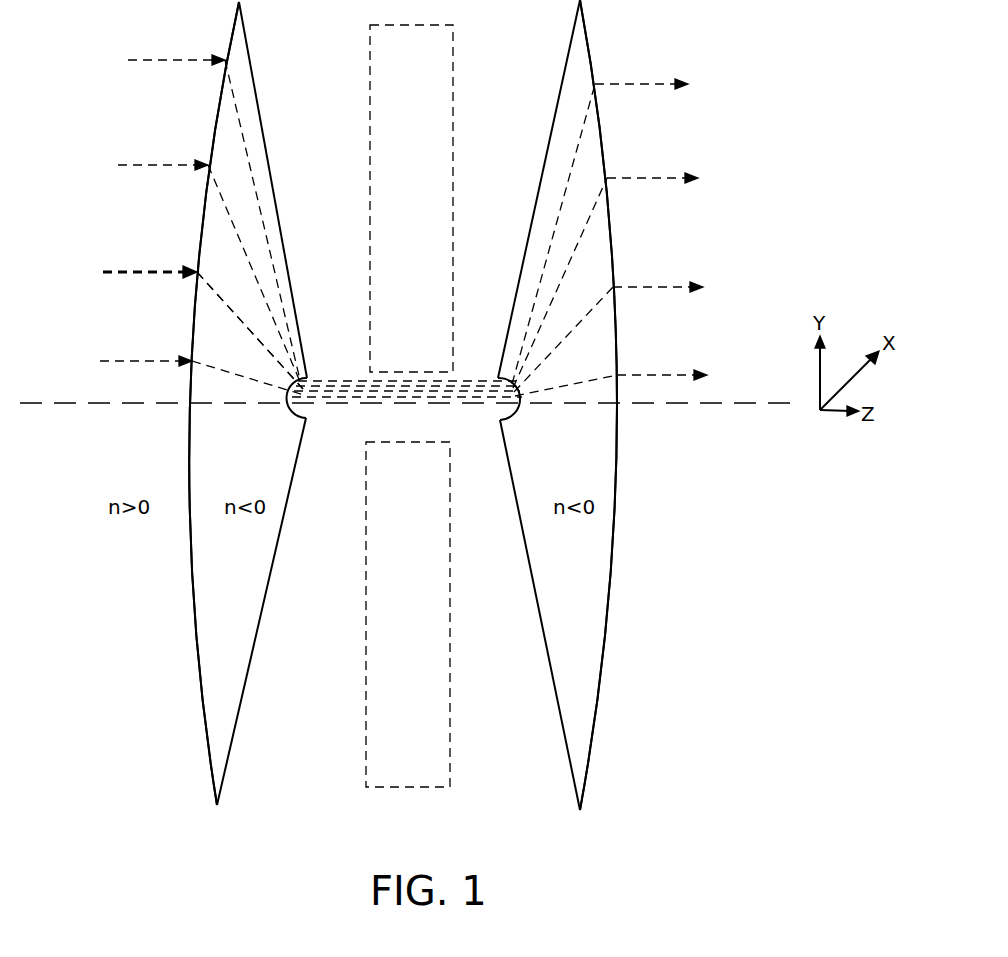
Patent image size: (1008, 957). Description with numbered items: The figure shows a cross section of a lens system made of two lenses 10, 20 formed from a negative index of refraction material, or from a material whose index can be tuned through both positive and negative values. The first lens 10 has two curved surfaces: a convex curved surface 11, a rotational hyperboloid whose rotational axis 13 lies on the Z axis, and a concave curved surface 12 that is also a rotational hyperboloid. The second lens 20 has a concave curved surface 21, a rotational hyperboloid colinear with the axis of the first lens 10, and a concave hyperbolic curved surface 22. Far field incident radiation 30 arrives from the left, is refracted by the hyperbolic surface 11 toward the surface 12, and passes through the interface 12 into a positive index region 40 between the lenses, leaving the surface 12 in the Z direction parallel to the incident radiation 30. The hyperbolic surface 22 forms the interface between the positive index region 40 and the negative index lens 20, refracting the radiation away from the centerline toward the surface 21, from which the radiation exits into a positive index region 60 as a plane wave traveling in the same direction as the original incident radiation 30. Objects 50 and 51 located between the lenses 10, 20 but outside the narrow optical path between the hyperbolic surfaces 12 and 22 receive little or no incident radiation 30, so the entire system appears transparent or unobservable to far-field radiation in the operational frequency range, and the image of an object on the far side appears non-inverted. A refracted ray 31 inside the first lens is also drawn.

The lens 10 is at (205, 678).
The curved surface 11 is at (186, 554).
The curved surface 12 is at (312, 409).
The rotational axis 13 is at (63, 419).
The lens 20 is at (593, 672).
The curved surface 21 is at (624, 461).
The curved surface 22 is at (494, 409).
The incident radiation 30 is at (120, 272).
The refracted light ray 31 is at (219, 298).
The region 40 is at (341, 206).
The object 50 is at (428, 216).
The object 51 is at (421, 627).
The region 60 is at (758, 187).